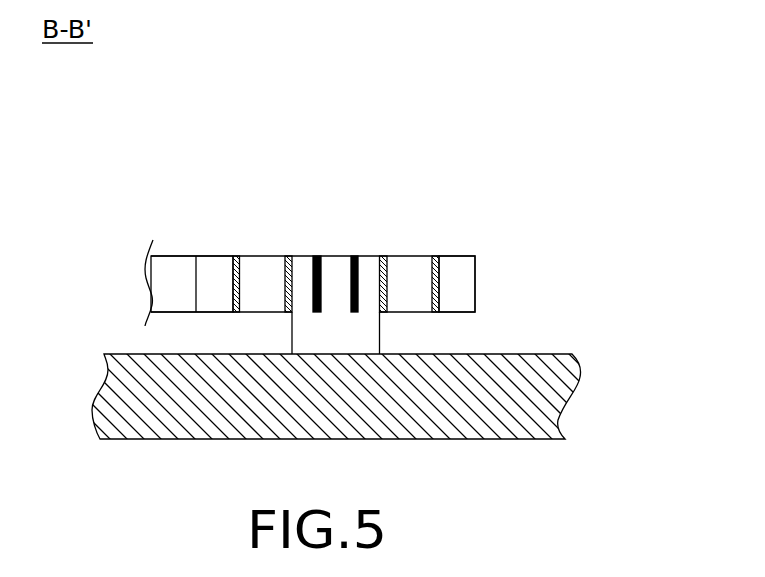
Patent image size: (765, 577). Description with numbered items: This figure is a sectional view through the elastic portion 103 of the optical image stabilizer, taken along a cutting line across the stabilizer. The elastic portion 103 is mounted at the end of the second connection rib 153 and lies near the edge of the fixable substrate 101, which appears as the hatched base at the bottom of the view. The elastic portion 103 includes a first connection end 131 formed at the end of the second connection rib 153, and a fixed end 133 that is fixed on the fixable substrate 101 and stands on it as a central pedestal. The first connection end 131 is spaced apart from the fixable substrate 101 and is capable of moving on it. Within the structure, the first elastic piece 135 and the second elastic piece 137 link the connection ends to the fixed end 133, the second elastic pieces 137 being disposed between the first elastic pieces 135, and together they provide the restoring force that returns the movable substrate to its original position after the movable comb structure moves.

The elastic portion 103 is at (360, 122).
The first connection end 131 is at (212, 265).
The fixed end 133 is at (368, 333).
The first elastic piece 135 is at (235, 256).
The second elastic piece 137 is at (288, 256).
The fixable substrate 101 is at (553, 373).
The second connection rib 153 is at (144, 279).